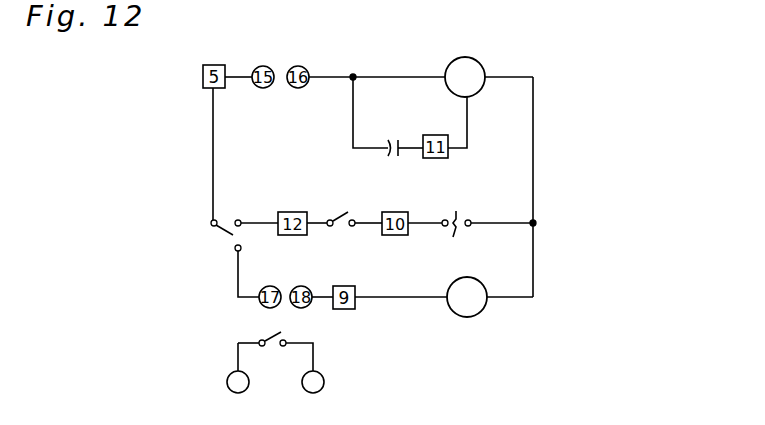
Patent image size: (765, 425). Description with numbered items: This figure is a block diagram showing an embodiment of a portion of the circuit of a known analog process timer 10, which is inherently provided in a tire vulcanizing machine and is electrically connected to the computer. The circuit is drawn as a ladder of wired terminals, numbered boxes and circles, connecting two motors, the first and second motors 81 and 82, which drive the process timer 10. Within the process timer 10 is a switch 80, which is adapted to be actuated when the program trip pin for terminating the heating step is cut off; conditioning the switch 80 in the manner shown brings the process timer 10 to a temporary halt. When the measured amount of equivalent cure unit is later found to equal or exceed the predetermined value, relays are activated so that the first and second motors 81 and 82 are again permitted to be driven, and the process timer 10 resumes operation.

The M1 motor 81 is at (474, 60).
The M2 motor 82 is at (478, 283).
The switch 80 is at (254, 325).
The process timer 10 is at (517, 330).